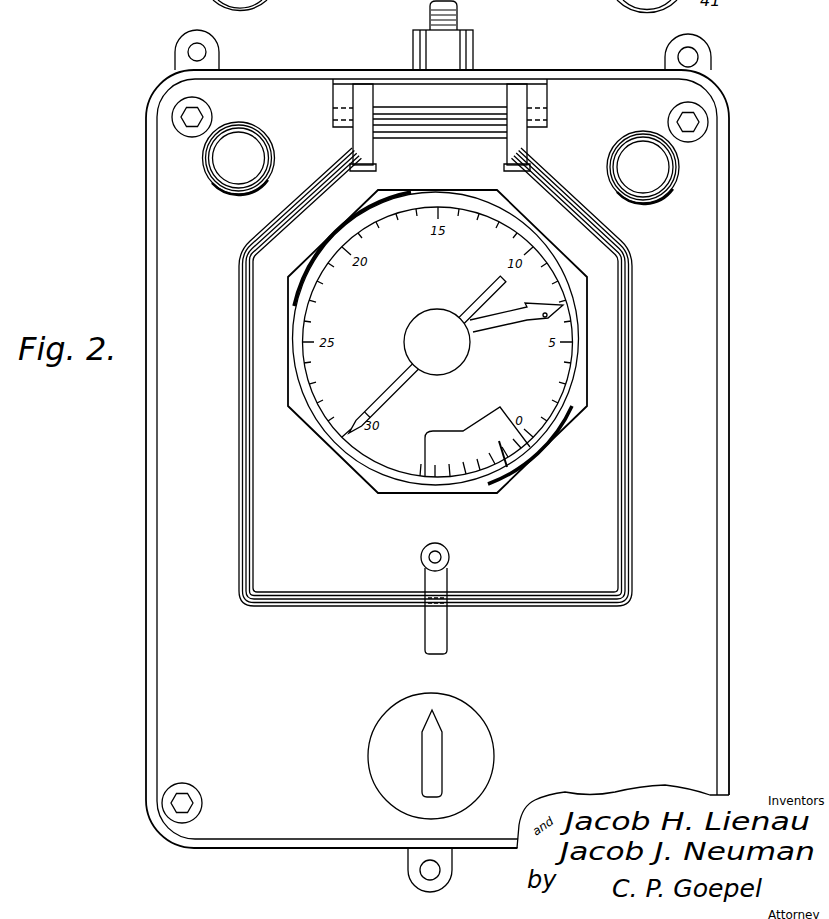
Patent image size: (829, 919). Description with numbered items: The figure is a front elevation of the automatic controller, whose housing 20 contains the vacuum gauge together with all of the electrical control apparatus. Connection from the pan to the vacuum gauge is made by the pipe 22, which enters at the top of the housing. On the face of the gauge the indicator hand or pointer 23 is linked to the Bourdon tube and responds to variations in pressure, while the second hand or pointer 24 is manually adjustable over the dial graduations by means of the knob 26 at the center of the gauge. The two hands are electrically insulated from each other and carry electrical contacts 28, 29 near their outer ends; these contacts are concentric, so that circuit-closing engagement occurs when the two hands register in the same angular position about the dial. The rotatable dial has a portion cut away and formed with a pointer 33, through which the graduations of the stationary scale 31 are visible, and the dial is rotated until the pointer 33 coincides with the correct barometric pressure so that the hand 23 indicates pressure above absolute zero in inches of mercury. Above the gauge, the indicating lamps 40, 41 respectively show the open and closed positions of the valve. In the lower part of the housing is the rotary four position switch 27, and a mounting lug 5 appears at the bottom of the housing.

The mounting lug 5 is at (430, 882).
The housing 20 is at (731, 336).
The pipe 22 is at (457, 18).
The indicator hand 23 is at (403, 386).
The pointer 24 is at (503, 328).
The knob 26 is at (468, 366).
The rotary four position switch 27 is at (445, 732).
The electrical contact 28 is at (543, 318).
The electrical contact 29 is at (365, 400).
The stationary scale 31 is at (505, 462).
The pointer 33 is at (463, 433).
The indicating lamp 40 is at (258, 130).
The indicating lamp 41 is at (636, 133).